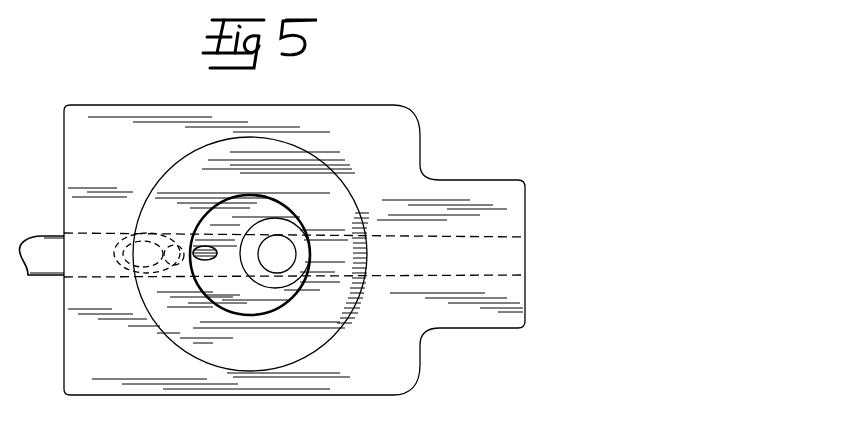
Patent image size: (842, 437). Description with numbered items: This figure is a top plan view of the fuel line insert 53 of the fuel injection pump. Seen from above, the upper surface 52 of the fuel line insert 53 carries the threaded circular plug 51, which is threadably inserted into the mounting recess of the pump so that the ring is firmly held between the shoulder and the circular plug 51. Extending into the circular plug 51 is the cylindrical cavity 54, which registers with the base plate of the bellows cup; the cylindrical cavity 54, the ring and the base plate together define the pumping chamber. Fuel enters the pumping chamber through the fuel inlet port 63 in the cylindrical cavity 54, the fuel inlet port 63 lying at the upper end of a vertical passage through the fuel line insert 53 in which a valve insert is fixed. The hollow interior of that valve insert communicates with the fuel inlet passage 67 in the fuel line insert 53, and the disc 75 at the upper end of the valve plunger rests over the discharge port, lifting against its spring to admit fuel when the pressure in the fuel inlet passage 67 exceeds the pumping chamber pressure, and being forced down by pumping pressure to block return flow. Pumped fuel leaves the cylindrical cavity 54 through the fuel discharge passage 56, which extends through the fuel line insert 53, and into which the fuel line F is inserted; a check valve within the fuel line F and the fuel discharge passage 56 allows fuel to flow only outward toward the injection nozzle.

The threaded circular plug 51 is at (275, 351).
The upper surface 52 is at (380, 147).
The fuel line insert 53 is at (388, 397).
The cylindrical cavity 54 is at (224, 280).
The fuel discharge passage 56 is at (228, 234).
The fuel inlet port 63 is at (258, 286).
The fuel inlet passage 67 is at (488, 267).
The disc 75 is at (277, 254).
The fuel line F is at (48, 278).